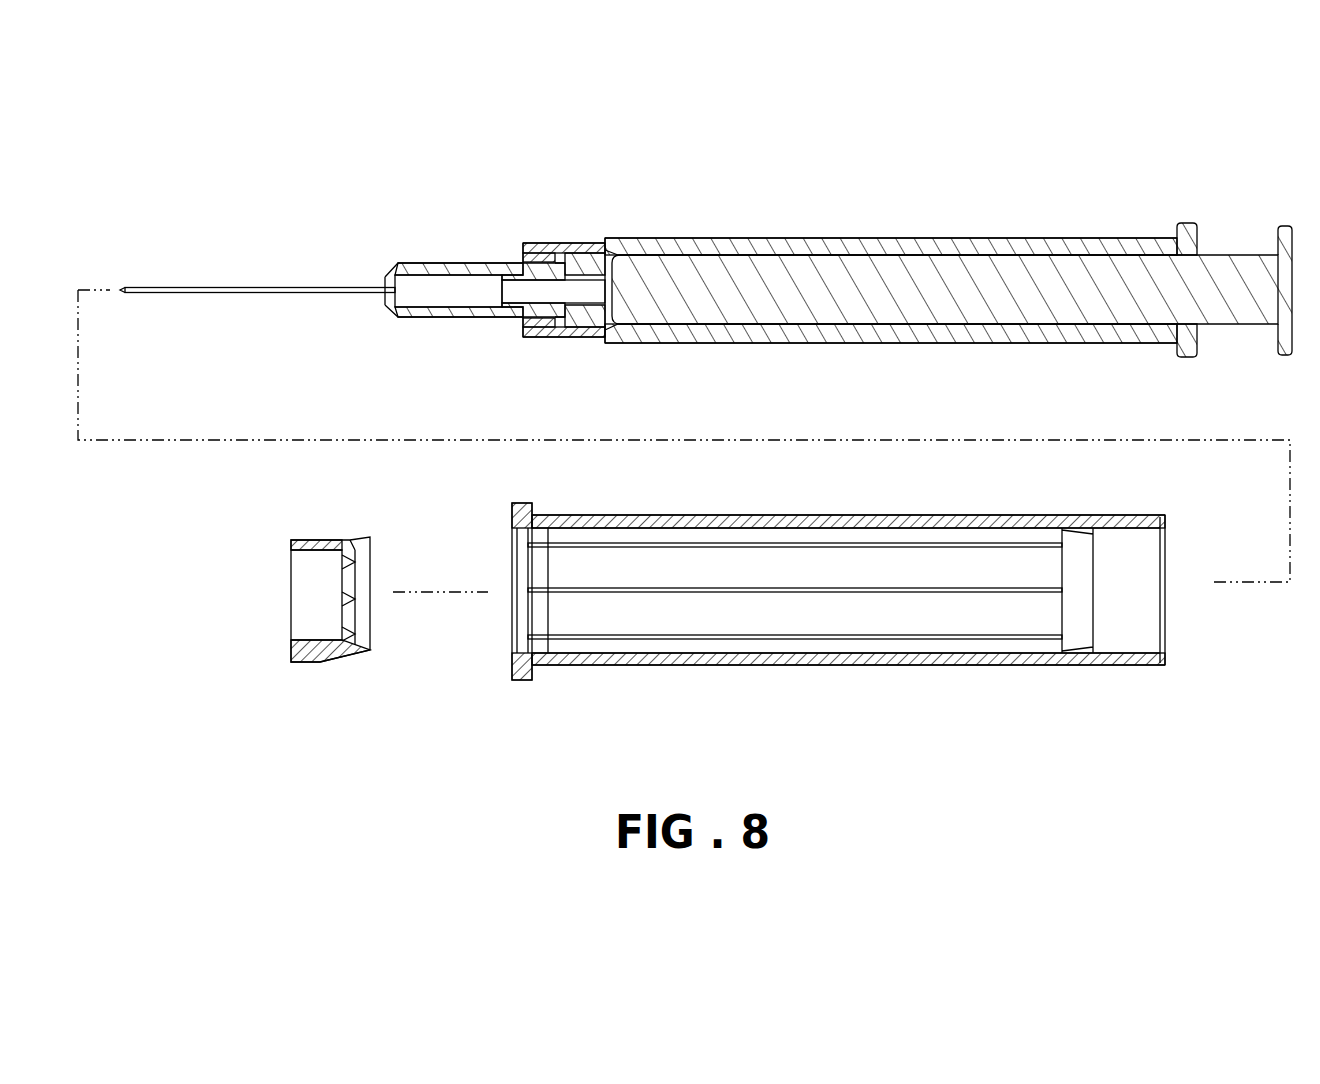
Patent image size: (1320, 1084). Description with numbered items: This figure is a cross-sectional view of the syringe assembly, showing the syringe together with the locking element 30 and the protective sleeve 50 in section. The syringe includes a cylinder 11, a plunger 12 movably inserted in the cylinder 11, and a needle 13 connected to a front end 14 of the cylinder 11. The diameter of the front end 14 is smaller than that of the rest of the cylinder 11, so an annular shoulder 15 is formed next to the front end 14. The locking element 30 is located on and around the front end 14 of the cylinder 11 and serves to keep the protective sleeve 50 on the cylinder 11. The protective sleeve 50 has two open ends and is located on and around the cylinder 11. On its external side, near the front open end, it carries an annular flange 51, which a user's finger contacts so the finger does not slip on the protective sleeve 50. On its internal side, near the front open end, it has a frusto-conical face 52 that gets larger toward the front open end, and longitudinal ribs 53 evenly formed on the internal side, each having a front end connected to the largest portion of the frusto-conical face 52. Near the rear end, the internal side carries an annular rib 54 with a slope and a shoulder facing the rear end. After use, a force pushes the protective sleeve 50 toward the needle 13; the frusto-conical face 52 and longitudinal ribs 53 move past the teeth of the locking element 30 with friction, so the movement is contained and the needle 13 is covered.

The cylinder 11 is at (897, 240).
The plunger 12 is at (988, 277).
The needle 13 is at (233, 288).
The front end 14 is at (550, 243).
The annular shoulder 15 is at (605, 240).
The locking element 30 is at (315, 532).
The protective sleeve 50 is at (895, 665).
The annular flange 51 is at (517, 682).
The frusto-conical face 52 is at (542, 618).
The longitudinal ribs 53 is at (743, 592).
The annular rib 54 is at (1078, 617).